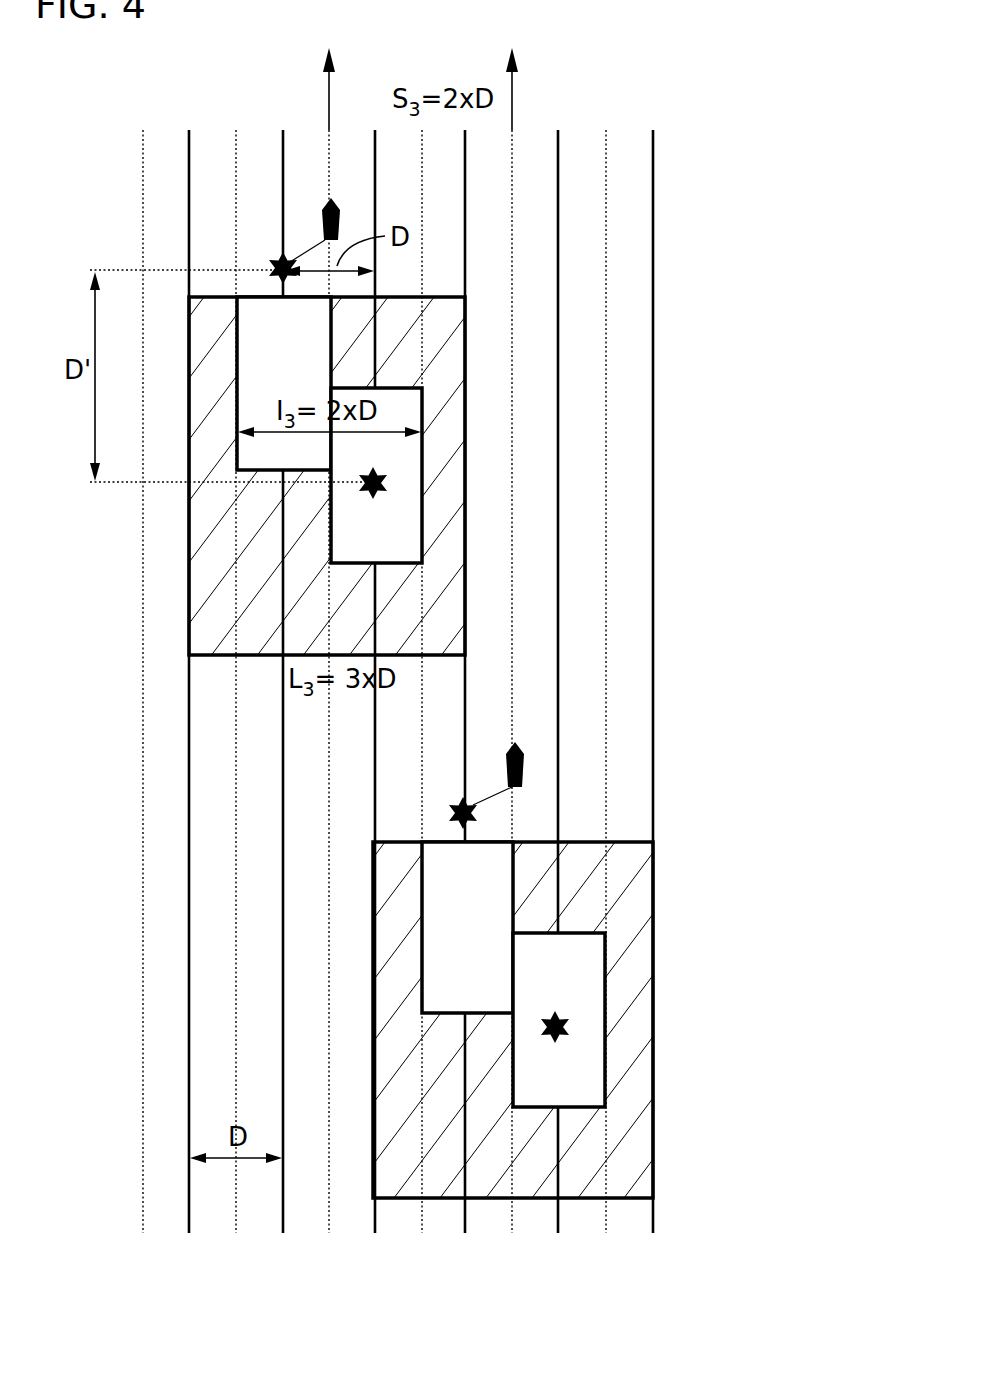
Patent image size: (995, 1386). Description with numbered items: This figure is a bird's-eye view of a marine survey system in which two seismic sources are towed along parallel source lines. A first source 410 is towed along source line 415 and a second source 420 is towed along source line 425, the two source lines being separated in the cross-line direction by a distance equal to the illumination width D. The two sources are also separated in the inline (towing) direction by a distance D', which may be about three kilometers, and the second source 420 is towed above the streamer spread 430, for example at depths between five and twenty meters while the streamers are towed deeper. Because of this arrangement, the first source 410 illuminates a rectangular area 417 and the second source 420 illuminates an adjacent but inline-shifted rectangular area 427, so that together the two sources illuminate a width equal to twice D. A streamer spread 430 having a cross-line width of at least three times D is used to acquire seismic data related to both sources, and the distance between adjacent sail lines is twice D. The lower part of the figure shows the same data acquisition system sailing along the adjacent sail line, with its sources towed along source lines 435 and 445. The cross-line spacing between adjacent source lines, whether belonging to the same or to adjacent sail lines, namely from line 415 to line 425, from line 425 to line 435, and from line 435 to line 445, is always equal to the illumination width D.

The source 410 is at (283, 256).
The source line 415 is at (283, 1222).
The rectangular area 417 is at (250, 362).
The source 420 is at (385, 483).
The source line 425 is at (375, 1222).
The rectangular area 427 is at (410, 528).
The spread 430 is at (243, 625).
The source line 435 is at (465, 1222).
The source line 445 is at (558, 1222).